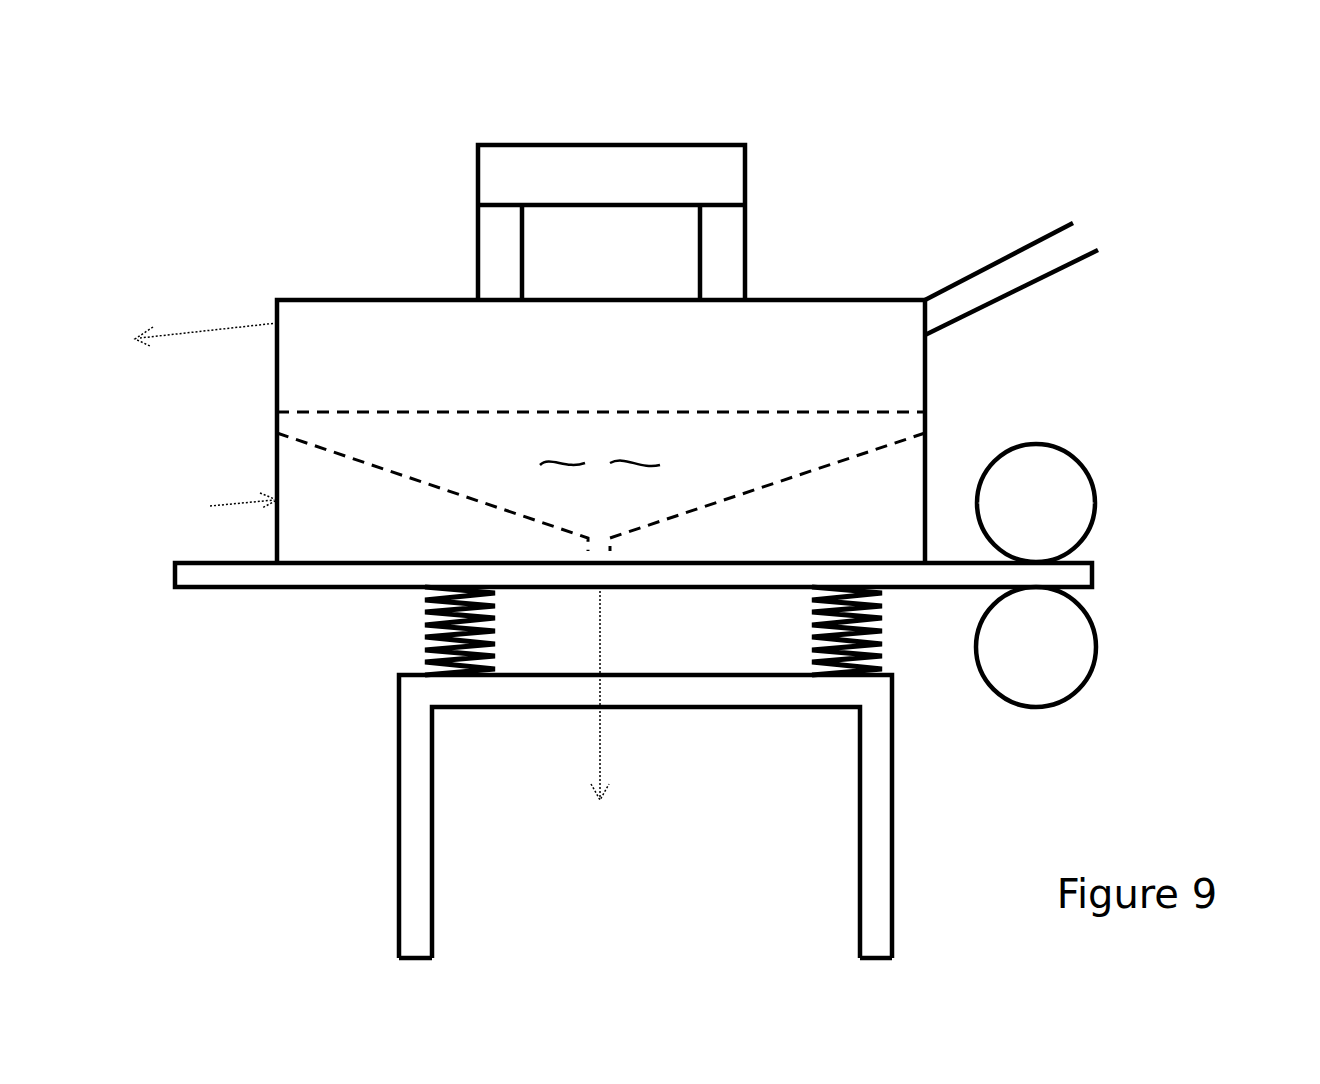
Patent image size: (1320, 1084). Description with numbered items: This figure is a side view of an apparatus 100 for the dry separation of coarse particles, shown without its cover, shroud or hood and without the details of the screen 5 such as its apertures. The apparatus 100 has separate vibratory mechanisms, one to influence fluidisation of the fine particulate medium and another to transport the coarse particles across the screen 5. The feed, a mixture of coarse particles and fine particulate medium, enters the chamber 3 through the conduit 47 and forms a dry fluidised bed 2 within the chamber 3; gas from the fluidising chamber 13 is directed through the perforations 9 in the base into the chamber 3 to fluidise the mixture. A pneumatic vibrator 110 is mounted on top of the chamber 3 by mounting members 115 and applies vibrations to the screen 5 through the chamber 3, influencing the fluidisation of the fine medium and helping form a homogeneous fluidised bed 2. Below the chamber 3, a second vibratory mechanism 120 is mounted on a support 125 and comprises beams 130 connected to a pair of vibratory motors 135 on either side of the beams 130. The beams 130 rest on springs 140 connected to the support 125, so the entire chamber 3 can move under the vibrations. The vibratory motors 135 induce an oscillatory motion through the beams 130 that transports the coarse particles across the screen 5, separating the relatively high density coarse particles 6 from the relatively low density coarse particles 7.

The apparatus 100 is at (352, 144).
The pneumatic vibrator 110 is at (735, 158).
The mounting members 115 is at (493, 227).
The chamber 3 is at (925, 372).
The conduit 47 is at (1020, 290).
The screen 5 is at (720, 410).
The perforations 9 is at (925, 448).
The fluidised bed 2 is at (600, 465).
The relatively low density coarse particles 7 is at (187, 330).
The fluidising chamber 13 is at (298, 465).
The beams 130 is at (1095, 570).
The vibratory motors 135 is at (1050, 480).
The vibratory mechanism 120 is at (1168, 534).
The springs 140 is at (425, 640).
The support 125 is at (892, 822).
The relatively high density coarse particles 6 is at (600, 773).